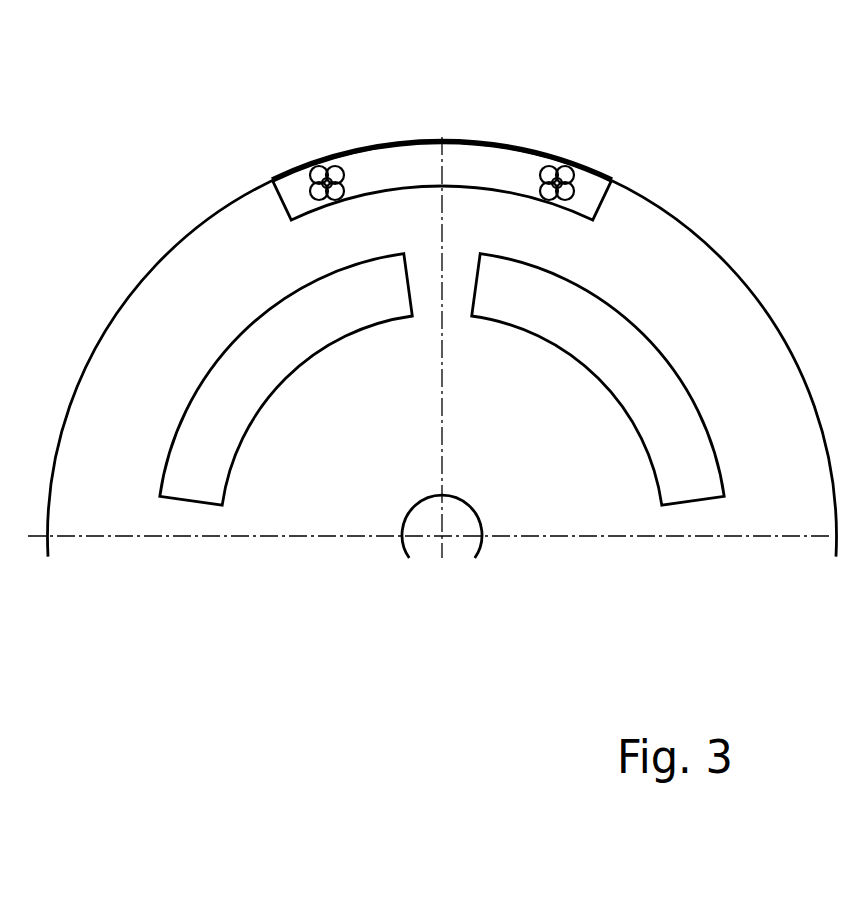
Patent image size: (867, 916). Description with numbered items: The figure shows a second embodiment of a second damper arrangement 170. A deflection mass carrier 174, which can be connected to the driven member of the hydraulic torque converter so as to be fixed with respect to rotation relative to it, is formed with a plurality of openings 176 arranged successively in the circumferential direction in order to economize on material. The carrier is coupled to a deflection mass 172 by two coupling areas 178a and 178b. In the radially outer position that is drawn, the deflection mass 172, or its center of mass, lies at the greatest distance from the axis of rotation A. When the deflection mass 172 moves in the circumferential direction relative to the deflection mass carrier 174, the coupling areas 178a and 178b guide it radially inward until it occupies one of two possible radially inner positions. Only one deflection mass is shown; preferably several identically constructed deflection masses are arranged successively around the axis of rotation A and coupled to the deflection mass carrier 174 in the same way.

The second damper arrangement 170 is at (583, 570).
The deflection mass 172 is at (459, 173).
The deflection mass carrier 174 is at (342, 498).
The openings 176 is at (275, 374).
The coupling area 178a is at (315, 147).
The coupling area 178b is at (580, 143).
The axis of rotation A is at (442, 535).